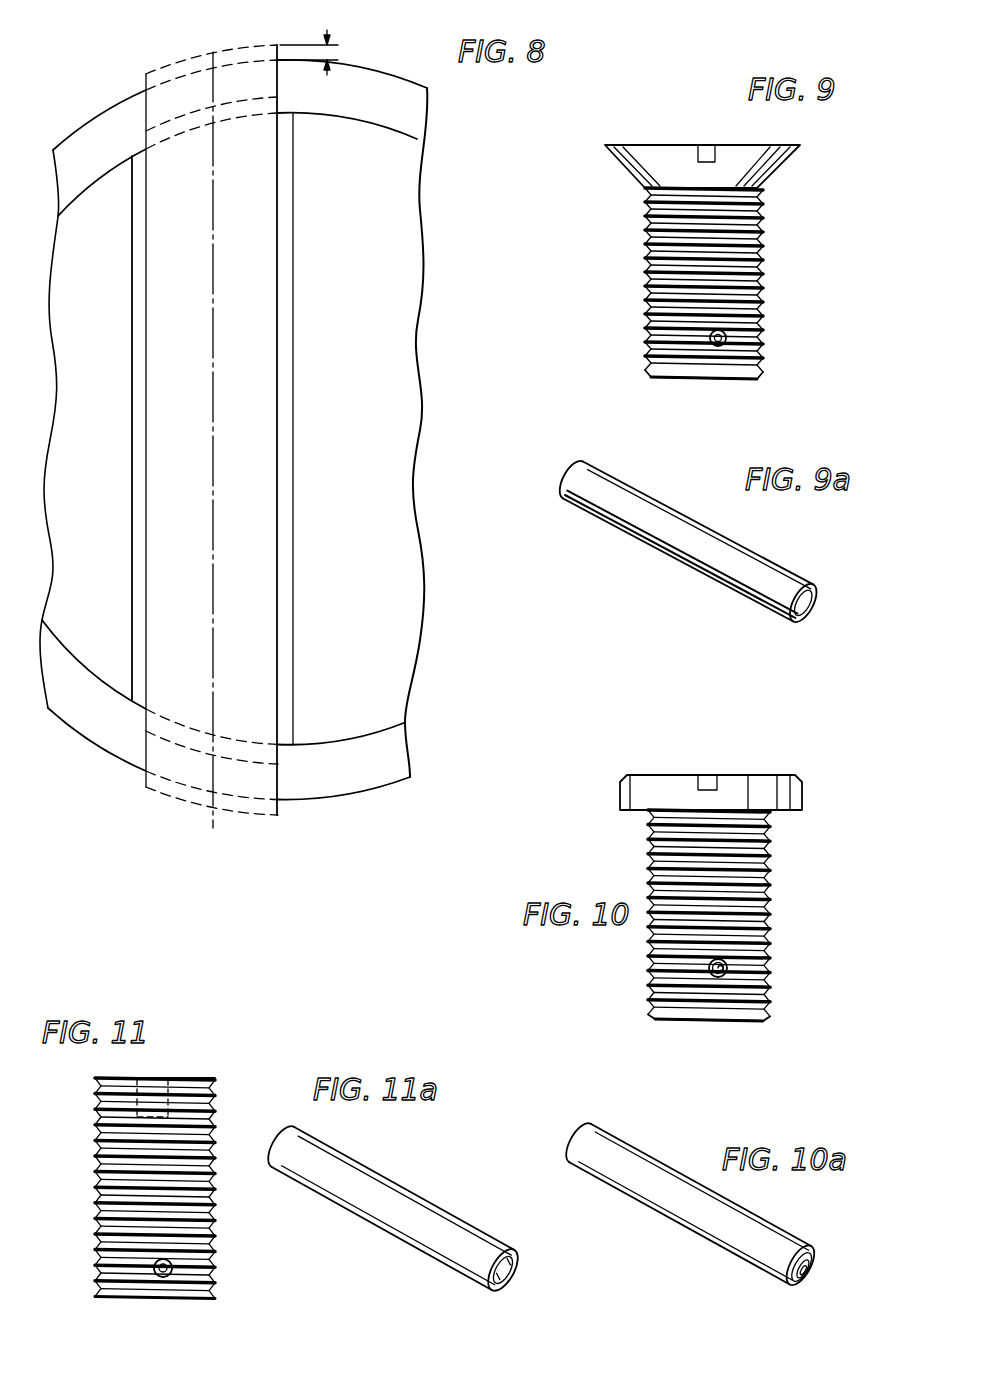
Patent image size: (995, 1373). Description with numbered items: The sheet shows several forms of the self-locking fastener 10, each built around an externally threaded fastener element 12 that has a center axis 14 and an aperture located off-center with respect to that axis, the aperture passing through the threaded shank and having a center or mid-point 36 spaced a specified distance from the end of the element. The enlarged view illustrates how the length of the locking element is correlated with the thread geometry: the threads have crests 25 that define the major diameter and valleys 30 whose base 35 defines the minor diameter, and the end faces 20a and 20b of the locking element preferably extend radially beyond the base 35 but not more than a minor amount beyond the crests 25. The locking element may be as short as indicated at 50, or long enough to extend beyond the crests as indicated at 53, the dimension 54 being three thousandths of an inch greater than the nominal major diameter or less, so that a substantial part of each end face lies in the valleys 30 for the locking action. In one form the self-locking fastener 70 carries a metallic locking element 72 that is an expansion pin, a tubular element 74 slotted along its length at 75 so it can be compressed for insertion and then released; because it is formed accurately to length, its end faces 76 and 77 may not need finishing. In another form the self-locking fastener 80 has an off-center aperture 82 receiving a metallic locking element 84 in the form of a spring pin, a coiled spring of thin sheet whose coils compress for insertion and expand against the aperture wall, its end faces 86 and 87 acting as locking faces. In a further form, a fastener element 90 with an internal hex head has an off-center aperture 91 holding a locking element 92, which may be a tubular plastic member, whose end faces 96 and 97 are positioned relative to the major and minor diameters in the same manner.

In FIG. 8, the self-locking fastener 10 is at (480, 117).
In FIG. 8, the externally threaded fastener element 12 is at (405, 270).
In FIG. 8, the center axis 14 is at (293, 433).
In FIG. 8, the end face of locking element 20a is at (210, 52).
In FIG. 8, the end face of locking element 20b is at (203, 803).
In FIG. 8, the thread crests 25 is at (413, 77).
In FIG. 8, the thread valleys 30 is at (405, 115).
In FIG. 8, the valley base 35 is at (398, 132).
In FIG. 8, the aperture center 36 is at (214, 413).
In FIG. 8, the short locking element length 50 is at (252, 97).
In FIG. 8, the long locking element length 53 is at (170, 62).
In FIG. 8, the dimension beyond crests 54 is at (338, 50).
In FIG. 9, the self-locking fastener 70 is at (770, 255).
In FIG. 9, the metallic locking element 72 is at (730, 332).
In FIG. 9A, the metallic locking element 72 is at (665, 492).
In FIG. 9A, the tubular element 74 is at (750, 557).
In FIG. 9A, the slot 75 is at (752, 612).
In FIG. 9A, the end face of expansion pin 76 is at (812, 618).
In FIG. 9A, the end face of expansion pin 77 is at (582, 463).
In FIG. 10, the self-locking fastener 80 is at (778, 868).
In FIG. 10, the off-center aperture 82 is at (735, 968).
In FIG. 10, the metallic locking element 84 is at (702, 963).
In FIG. 10A, the metallic locking element 84 is at (648, 1143).
In FIG. 10A, the end face of spring pin 86 is at (813, 1255).
In FIG. 10A, the end face of spring pin 87 is at (578, 1130).
In FIG. 11, the fastener element 90 is at (218, 1107).
In FIG. 11, the off-center aperture 91 is at (195, 1265).
In FIG. 11, the locking element 92 is at (173, 1252).
In FIG. 11A, the locking element 92 is at (443, 1198).
In FIG. 11A, the end face of locking element 96 is at (518, 1263).
In FIG. 11A, the end face of locking element 97 is at (283, 1135).